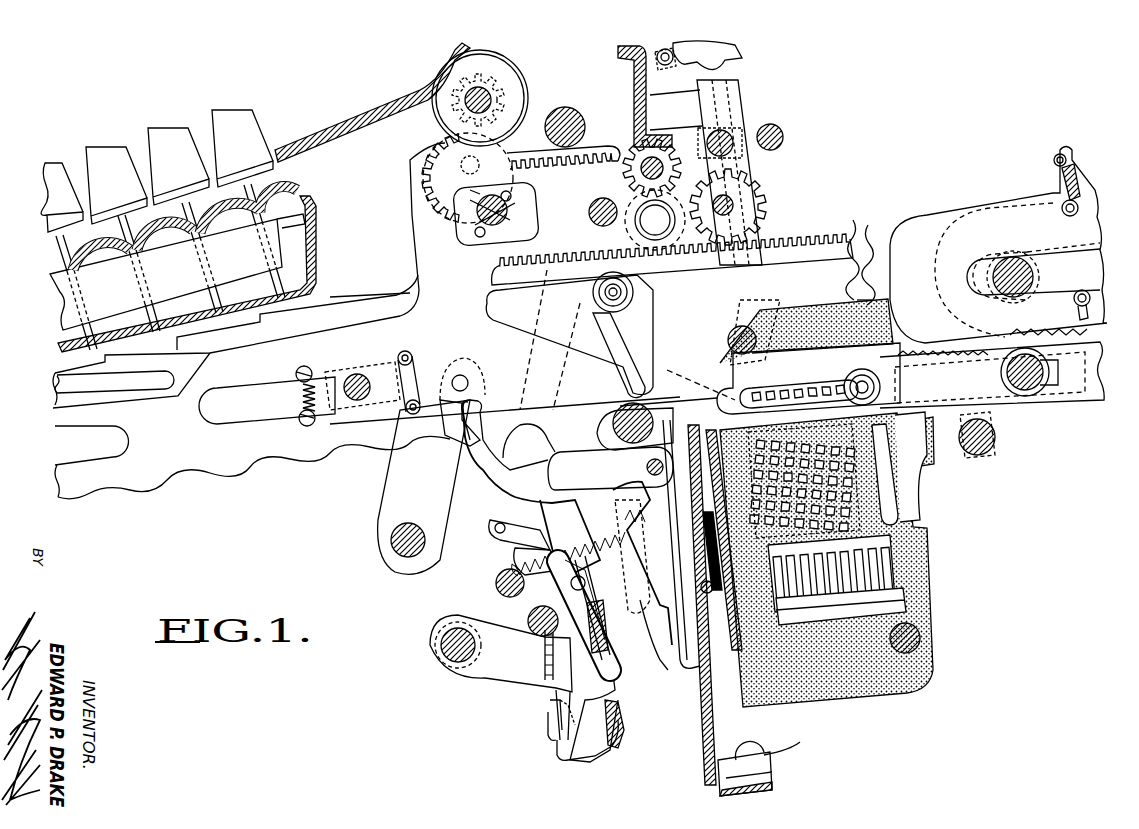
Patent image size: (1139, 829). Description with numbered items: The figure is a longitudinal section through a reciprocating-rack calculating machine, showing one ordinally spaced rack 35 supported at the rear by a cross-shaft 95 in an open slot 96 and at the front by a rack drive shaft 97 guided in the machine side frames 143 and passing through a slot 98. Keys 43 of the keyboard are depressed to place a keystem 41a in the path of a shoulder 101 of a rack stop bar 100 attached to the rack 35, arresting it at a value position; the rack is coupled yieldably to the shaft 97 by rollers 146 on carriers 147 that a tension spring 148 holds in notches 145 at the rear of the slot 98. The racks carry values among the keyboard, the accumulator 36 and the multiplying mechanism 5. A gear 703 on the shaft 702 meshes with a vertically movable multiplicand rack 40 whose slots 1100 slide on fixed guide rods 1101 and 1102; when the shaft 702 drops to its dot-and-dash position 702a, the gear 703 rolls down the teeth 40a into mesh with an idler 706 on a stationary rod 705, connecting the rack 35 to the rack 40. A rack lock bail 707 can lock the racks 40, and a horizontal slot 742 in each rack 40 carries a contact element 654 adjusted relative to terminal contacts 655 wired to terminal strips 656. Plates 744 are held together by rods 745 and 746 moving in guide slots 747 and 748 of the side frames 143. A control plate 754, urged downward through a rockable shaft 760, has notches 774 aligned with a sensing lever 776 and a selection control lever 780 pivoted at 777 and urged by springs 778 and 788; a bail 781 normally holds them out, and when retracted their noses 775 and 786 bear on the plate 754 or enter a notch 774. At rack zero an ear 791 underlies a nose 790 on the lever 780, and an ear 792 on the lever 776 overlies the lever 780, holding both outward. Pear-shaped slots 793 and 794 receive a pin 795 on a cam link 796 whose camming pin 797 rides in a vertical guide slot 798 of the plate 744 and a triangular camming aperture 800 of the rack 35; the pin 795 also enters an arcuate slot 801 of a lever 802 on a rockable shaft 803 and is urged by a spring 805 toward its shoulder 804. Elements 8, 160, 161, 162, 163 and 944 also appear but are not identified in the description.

The multiplying mechanism 5 is at (942, 473).
The stud 8 is at (997, 450).
The rack 35 is at (870, 220).
The accumulator 36 is at (530, 215).
The multiplicand rack 40 is at (743, 60).
The teeth of the racks 40a is at (622, 76).
The keystem 41a is at (266, 192).
The key 43 is at (53, 164).
The cross-shaft 95 is at (1007, 260).
The open slot 96 is at (1102, 244).
The rack drive shaft 97 is at (370, 428).
The slot 98 is at (224, 426).
The rack stop bar 100 is at (54, 376).
The shoulder 101 is at (174, 341).
The machine side frame 143 is at (1068, 396).
The notch 145 is at (404, 350).
The roller 146 is at (415, 362).
The carrier 147 is at (316, 366).
The tension spring 148 is at (300, 401).
The plate 160 is at (415, 244).
The pawl assembly 161 is at (515, 205).
The lower rack 162 is at (546, 260).
The upper rack 163 is at (605, 157).
The contact element 654 is at (881, 384).
The terminal contact 655 is at (884, 490).
The terminal strip 656 is at (909, 558).
The shaft 702 is at (645, 162).
The alternate position of shaft 702a is at (642, 247).
The gear 703 is at (622, 190).
The stationary rod 705 is at (752, 206).
The idler 706 is at (769, 198).
The rack lock bail 707 is at (614, 51).
The horizontally extending slot 742 is at (780, 372).
The plate 744 is at (714, 396).
The transversely extending rod 745 is at (1044, 372).
The transversely extending rod 746 is at (596, 408).
The guide slot 747 is at (1043, 368).
The guide slot 748 is at (510, 423).
The control plate 754 is at (640, 687).
The rockable shaft 760 is at (500, 590).
The notch 774 is at (643, 670).
The nose 775 is at (640, 698).
The sensing lever 776 is at (548, 705).
The pivot 777 is at (650, 472).
The spring 778 is at (514, 552).
The selection control lever 780 is at (530, 490).
The bail 781 is at (627, 737).
The nose 786 is at (628, 602).
The spring 788 is at (450, 500).
The nose 790 is at (486, 394).
The ear 791 is at (455, 452).
The ear 792 is at (550, 714).
The pear shaped slot 793 is at (553, 699).
The pear shaped slot 794 is at (542, 666).
The pin 795 is at (532, 608).
The cam link 796 is at (557, 306).
The camming pin 797 is at (630, 294).
The vertical guide slot 798 is at (641, 318).
The triangular camming aperture 800 is at (662, 350).
The arcuate slot 801 is at (490, 528).
The lever 802 is at (475, 683).
The rockable shaft 803 is at (442, 659).
The shoulder 804 is at (622, 516).
The spring 805 is at (632, 524).
The plate 944 is at (970, 340).
The slot 1100 is at (734, 102).
The fixed guide rod 1101 is at (734, 127).
The fixed guide rod 1102 is at (766, 311).